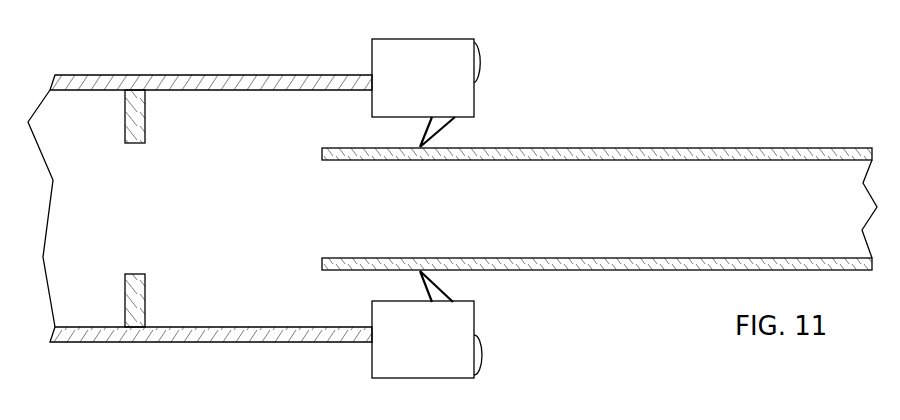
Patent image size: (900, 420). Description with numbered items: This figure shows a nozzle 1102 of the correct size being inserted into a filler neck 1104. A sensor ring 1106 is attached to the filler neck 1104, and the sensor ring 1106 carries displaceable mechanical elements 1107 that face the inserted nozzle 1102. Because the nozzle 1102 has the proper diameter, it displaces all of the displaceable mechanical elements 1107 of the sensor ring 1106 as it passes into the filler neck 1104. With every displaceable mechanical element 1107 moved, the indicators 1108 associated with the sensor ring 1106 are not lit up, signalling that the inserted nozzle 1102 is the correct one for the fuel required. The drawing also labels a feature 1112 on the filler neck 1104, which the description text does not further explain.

The nozzle 1102 is at (672, 265).
The filler neck 1104 is at (245, 74).
The sensor ring 1106 is at (400, 378).
The displaceable mechanical elements 1107 is at (433, 282).
The indicators 1108 is at (483, 63).
The support posts 1112 is at (138, 305).